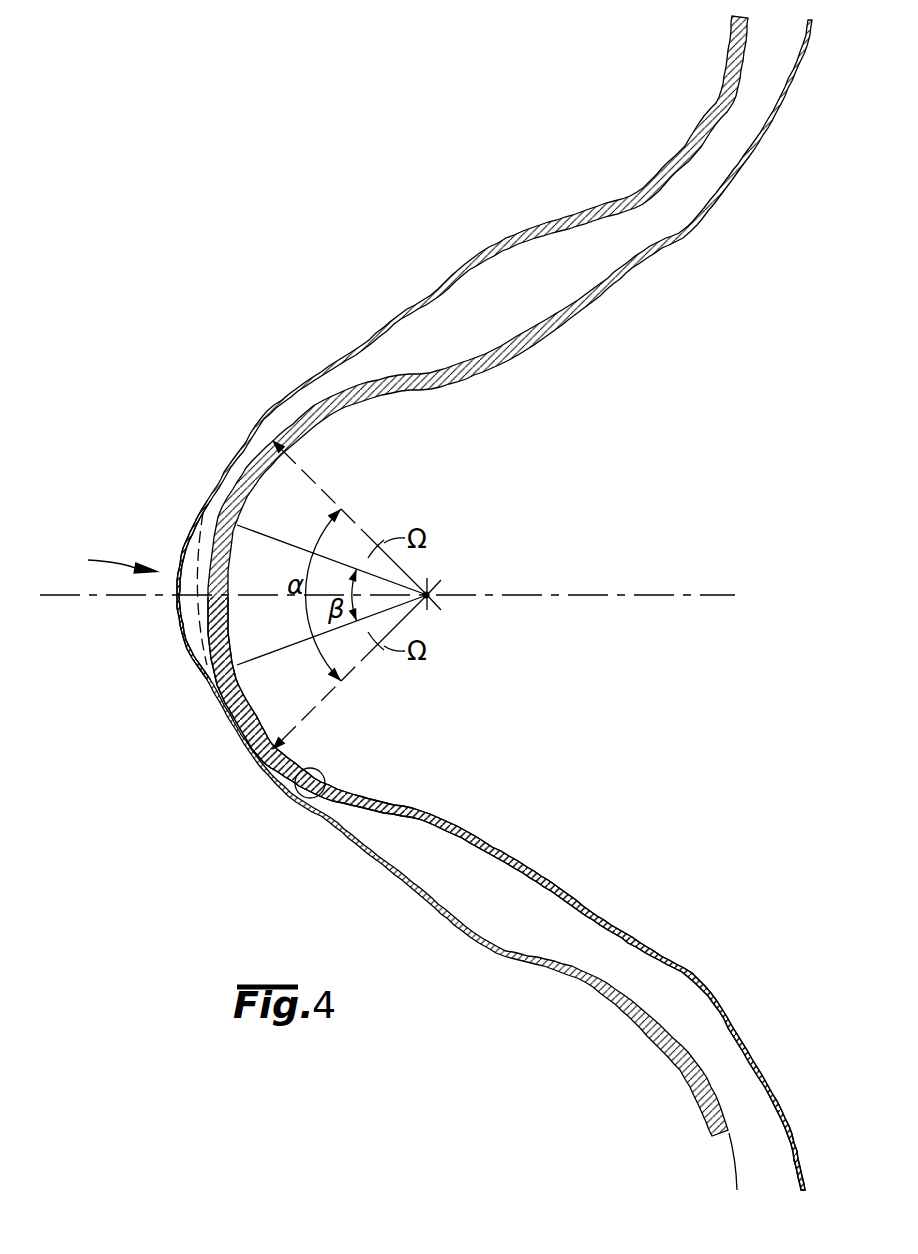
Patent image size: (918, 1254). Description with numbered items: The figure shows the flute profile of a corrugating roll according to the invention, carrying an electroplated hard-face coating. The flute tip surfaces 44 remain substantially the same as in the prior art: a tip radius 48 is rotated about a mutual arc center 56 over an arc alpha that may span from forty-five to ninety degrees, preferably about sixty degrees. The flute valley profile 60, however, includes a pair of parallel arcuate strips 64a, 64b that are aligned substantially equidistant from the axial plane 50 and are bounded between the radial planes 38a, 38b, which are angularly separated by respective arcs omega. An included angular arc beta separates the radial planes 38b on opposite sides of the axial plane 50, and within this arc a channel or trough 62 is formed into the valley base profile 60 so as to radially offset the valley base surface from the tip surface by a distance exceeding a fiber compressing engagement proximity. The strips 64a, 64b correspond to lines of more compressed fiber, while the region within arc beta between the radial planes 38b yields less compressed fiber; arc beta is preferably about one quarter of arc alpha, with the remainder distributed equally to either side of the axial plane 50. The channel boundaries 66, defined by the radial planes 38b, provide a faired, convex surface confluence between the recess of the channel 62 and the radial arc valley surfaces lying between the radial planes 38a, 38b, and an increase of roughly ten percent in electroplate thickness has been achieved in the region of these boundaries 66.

The radial plane 38a is at (248, 411).
The radial plane 38b is at (192, 505).
The flute tip surface 44 is at (324, 786).
The tip radius 48 is at (349, 595).
The axial plane 50 is at (543, 595).
The mutual arc center 56 is at (432, 588).
The flute valley profile 60 is at (102, 562).
The channel or trough 62 is at (177, 593).
The arcuate strip 64a is at (243, 443).
The arcuate strip 64b is at (230, 718).
The channel boundary 66 is at (202, 513).